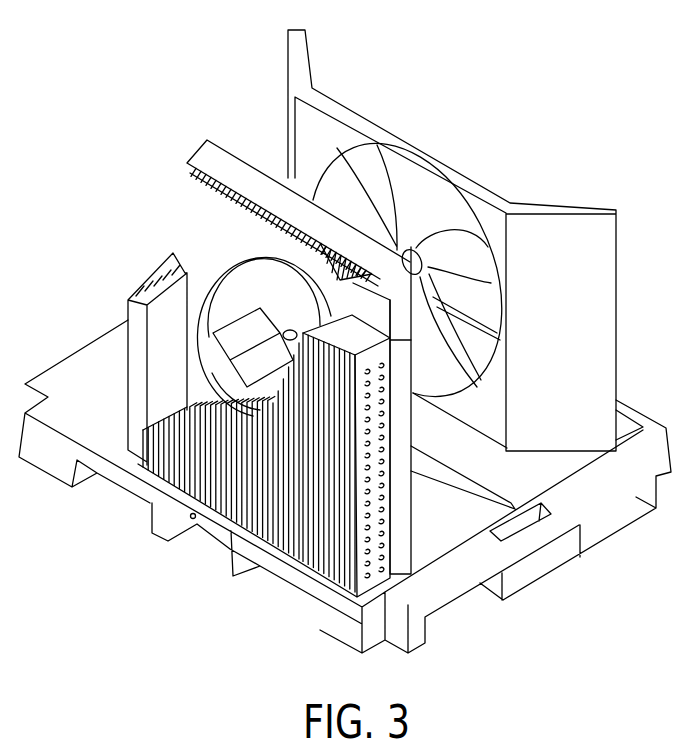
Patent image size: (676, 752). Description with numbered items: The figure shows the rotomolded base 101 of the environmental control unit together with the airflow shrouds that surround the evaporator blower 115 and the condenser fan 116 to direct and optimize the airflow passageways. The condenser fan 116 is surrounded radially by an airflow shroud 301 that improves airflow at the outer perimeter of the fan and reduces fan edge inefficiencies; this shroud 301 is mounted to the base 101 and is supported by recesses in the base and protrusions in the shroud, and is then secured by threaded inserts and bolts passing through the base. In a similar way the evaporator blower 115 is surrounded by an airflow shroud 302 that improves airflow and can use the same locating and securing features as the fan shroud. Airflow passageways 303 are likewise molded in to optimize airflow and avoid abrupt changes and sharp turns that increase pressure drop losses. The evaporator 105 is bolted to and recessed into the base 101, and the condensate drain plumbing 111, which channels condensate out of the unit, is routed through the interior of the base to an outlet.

The molded base 101 is at (228, 549).
The evaporator 105 is at (310, 529).
The condensate drain plumbing 111 is at (190, 520).
The evaporator blower 115 is at (223, 263).
The condenser fan 116 is at (370, 172).
The airflow shroud 301 is at (596, 270).
The airflow shroud 302 is at (137, 315).
The airflow passageways 303 is at (210, 197).